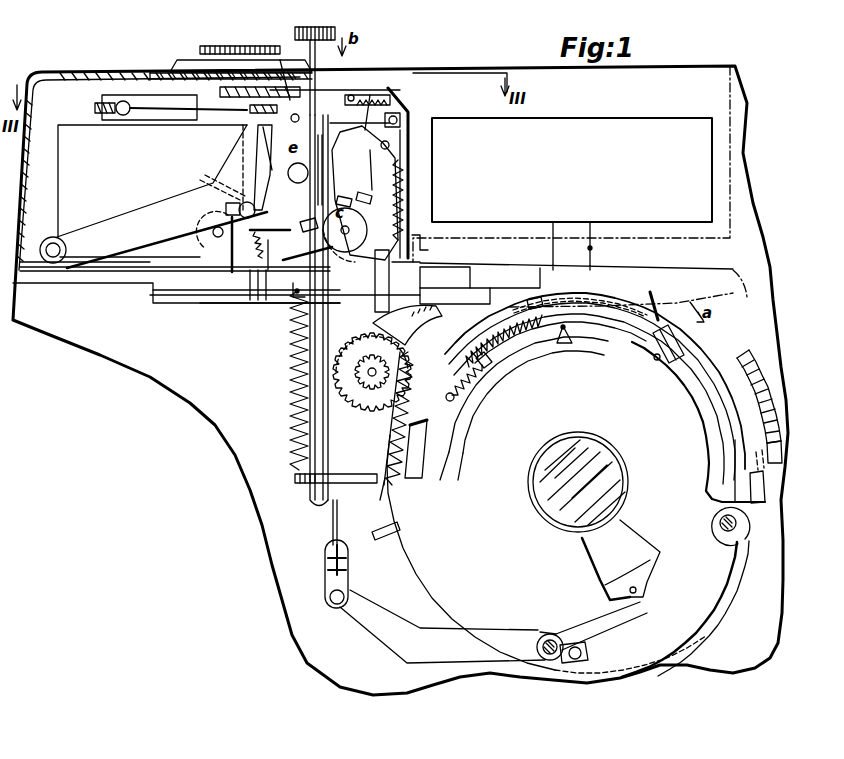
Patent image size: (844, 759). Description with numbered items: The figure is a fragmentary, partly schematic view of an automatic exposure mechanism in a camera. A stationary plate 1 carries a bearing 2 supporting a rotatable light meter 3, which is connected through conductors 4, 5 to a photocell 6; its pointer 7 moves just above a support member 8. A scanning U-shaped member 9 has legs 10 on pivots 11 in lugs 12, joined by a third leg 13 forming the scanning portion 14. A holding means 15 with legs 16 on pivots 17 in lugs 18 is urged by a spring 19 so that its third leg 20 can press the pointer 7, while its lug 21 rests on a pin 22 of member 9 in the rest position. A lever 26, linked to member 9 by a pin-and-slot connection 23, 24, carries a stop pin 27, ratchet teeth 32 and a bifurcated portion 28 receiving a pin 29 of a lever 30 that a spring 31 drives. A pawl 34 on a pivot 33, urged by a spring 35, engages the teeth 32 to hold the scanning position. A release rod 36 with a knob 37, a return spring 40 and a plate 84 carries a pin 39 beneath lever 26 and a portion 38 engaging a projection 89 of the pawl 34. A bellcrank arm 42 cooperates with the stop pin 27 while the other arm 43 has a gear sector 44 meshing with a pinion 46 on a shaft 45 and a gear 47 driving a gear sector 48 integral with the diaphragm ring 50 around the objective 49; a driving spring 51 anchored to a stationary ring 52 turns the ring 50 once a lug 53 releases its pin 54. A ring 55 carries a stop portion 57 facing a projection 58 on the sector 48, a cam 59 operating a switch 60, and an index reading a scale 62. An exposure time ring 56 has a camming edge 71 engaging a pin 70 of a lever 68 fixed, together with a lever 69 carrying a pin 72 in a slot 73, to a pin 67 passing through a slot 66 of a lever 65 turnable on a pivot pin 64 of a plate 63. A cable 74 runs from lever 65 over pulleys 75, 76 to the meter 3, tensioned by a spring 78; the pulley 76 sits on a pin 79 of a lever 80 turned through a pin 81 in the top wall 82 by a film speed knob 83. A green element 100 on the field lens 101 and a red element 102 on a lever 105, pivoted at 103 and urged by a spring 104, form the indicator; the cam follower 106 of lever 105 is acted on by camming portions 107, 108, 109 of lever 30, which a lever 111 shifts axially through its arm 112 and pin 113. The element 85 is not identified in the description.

The stationary plate 1 is at (98, 285).
The bearing 2 is at (133, 284).
The light meter 3 is at (70, 192).
The electrical conductor 4 is at (218, 300).
The electrical conductor 5 is at (228, 292).
The photocell 6 is at (702, 155).
The pointer 7 is at (263, 306).
The support member 8 is at (282, 244).
The U-shaped member 9 is at (213, 175).
The legs 10 is at (78, 270).
The pivots 11 is at (46, 246).
The lugs 12 is at (45, 285).
The third leg 13 is at (258, 130).
The scanning portion 14 is at (262, 142).
The holding means 15 is at (253, 305).
The legs 16 is at (226, 208).
The pivots 17 is at (213, 230).
The lugs 18 is at (205, 240).
The spring 19 is at (268, 314).
The third leg 20 is at (255, 203).
The lug 21 is at (228, 194).
The pin 22 is at (215, 195).
The pin of pin-and-slot connection 23 is at (348, 175).
The slot of pin-and-slot connection 24 is at (350, 190).
The lever 26 is at (349, 193).
The stop pin 27 is at (306, 170).
The bifurcated portion 28 is at (405, 192).
The pin 29 is at (372, 191).
The lever 30 is at (396, 98).
The spring 31 is at (428, 226).
The ratchet teeth 32 is at (358, 96).
The stationary pivot 33 is at (310, 71).
The pawl 34 is at (242, 64).
The spring 35 is at (272, 85).
The rod 36 is at (296, 478).
The knob 37 is at (330, 75).
The elongated portion 38 is at (345, 87).
The pin 39 is at (304, 224).
The return spring 40 is at (292, 438).
The arm 42 is at (309, 294).
The arm 43 is at (362, 320).
The gear sector portion 44 is at (418, 320).
The shaft 45 is at (372, 378).
The pinion 46 is at (363, 382).
The gear 47 is at (405, 232).
The gear sector portion 48 is at (382, 500).
The objective 49 is at (560, 512).
The diaphragm controlling ring 50 is at (437, 443).
The driving spring 51 is at (524, 334).
The stationary ring 52 is at (590, 342).
The lug 53 is at (682, 342).
The pin 54 is at (660, 352).
The ring 55 is at (700, 367).
The ring 56 is at (648, 562).
The stop portion 57 is at (560, 346).
The projection 58 is at (470, 378).
The switch-controlling cam 59 is at (643, 297).
The switch 60 is at (590, 267).
The scale 62 is at (757, 392).
The stationary plate 63 is at (425, 580).
The pivot pin 64 is at (736, 527).
The lever 65 is at (490, 662).
The elongated slot 66 is at (545, 637).
The pin 67 is at (767, 476).
The lever 68 is at (592, 622).
The lever 69 is at (560, 630).
The pin 70 is at (630, 580).
The camming edge 71 is at (622, 590).
The pin 72 is at (137, 100).
The elongated slot 73 is at (576, 662).
The cable 74 is at (333, 530).
The first pulley 75 is at (375, 118).
The second pulley 76 is at (215, 60).
The spring 78 is at (96, 107).
The pin 79 is at (288, 95).
The lever 80 is at (258, 70).
The pin 81 is at (180, 72).
The top wall 82 is at (46, 72).
The knob 83 is at (200, 50).
The plate 84 is at (339, 532).
The stop 85 is at (388, 542).
The projecting portion 89 is at (290, 118).
The translucent colored element 100 is at (455, 285).
The field lens 101 is at (749, 293).
The movable indicator element 102 is at (509, 278).
The stationary pivot 103 is at (370, 120).
The spring 104 is at (390, 88).
The lever 105 is at (380, 130).
The cam follower portion 106 is at (372, 95).
The camming portion 107 is at (376, 147).
The camming portion 108 is at (393, 130).
The camming portion 109 is at (387, 143).
The lever 111 is at (290, 300).
The arm 112 is at (407, 262).
The pin 113 is at (356, 260).